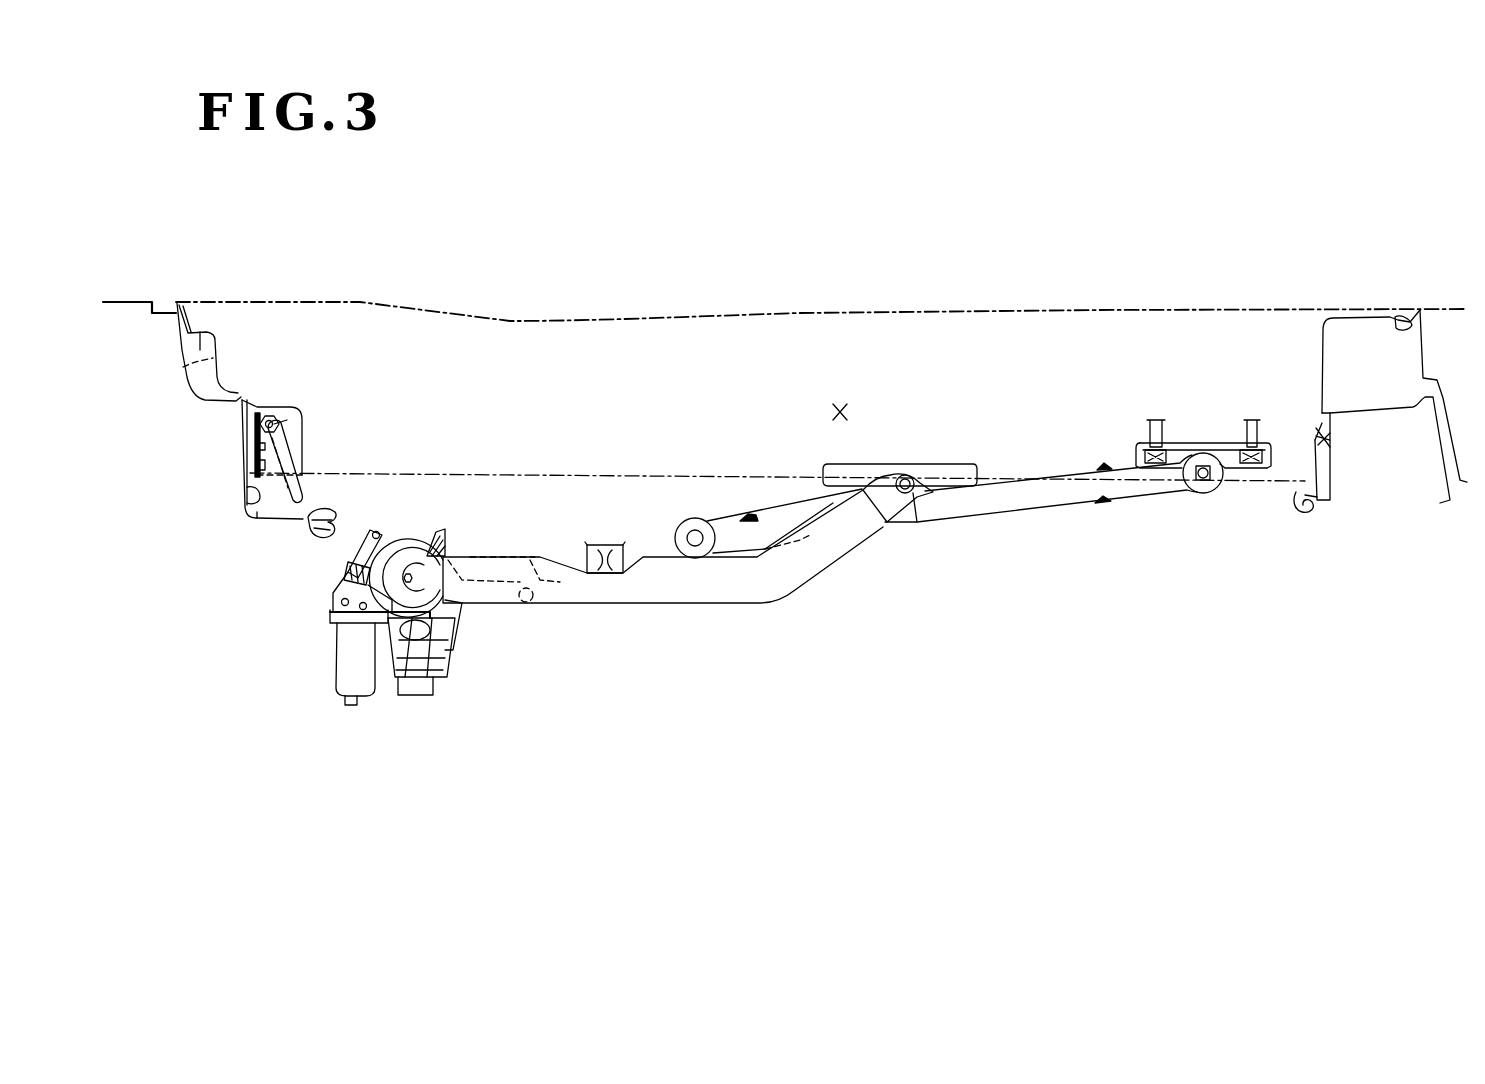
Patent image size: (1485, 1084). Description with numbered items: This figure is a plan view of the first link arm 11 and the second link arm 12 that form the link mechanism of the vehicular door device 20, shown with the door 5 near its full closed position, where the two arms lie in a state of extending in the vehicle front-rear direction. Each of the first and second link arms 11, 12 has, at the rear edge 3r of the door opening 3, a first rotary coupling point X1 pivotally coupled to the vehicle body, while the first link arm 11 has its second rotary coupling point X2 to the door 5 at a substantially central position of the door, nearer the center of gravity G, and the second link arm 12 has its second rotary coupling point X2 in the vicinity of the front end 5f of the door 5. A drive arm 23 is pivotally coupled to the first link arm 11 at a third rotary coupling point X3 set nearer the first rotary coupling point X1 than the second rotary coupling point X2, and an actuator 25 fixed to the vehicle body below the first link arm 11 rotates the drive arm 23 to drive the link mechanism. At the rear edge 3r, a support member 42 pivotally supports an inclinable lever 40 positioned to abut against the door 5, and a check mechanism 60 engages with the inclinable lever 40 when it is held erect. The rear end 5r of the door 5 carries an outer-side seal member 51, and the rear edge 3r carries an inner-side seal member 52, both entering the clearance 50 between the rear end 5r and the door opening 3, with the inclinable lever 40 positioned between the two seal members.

The door 5 is at (508, 320).
The rear end 5r is at (180, 358).
The outer-side seal member 51 is at (195, 402).
The support member 42 is at (250, 456).
The rear edge 3r is at (250, 518).
The clearance 50 is at (310, 496).
The inclinable lever 40 is at (277, 500).
The inner-side seal member 52 is at (323, 535).
The actuator 25 is at (340, 658).
The drive arm 23 is at (512, 610).
The vehicular door device 20 is at (175, 712).
The first link arm 11 is at (660, 607).
The second link arm 12 is at (1002, 517).
The check mechanism 60 is at (606, 541).
The first rotary coupling point X1 is at (407, 576).
The second rotary coupling point X2 is at (905, 476).
The third rotary coupling point X3 is at (530, 602).
The center of gravity G is at (840, 408).
The door opening 3 is at (1310, 480).
The front end 5f is at (1325, 362).